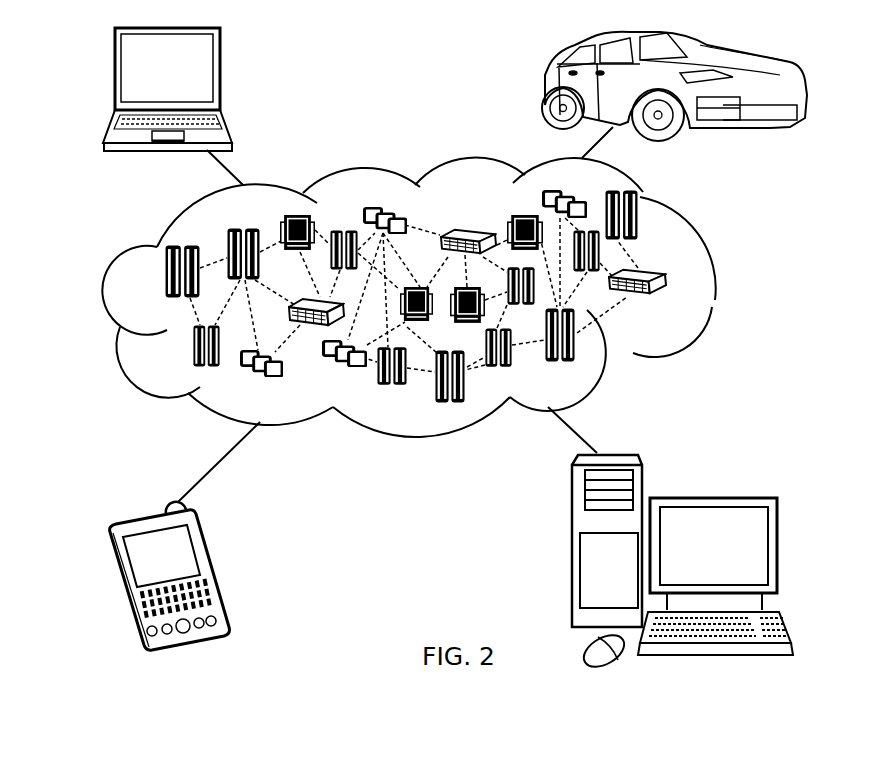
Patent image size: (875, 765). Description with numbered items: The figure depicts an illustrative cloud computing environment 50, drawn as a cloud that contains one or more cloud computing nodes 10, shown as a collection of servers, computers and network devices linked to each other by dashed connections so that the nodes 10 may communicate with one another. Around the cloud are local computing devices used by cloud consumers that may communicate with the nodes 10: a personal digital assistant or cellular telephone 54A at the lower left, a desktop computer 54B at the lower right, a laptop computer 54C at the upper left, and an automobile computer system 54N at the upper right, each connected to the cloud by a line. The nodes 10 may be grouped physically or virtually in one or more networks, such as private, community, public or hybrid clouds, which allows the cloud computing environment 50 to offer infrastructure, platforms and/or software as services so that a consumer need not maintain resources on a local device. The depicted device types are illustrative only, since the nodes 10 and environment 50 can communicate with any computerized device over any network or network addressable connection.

The cloud computing nodes 10 is at (676, 303).
The cloud computing environment 50 is at (712, 281).
The personal digital assistant or cellular telephone 54A is at (215, 569).
The desktop computer 54B is at (712, 497).
The laptop computer 54C is at (222, 72).
The automobile computer system 54N is at (548, 88).